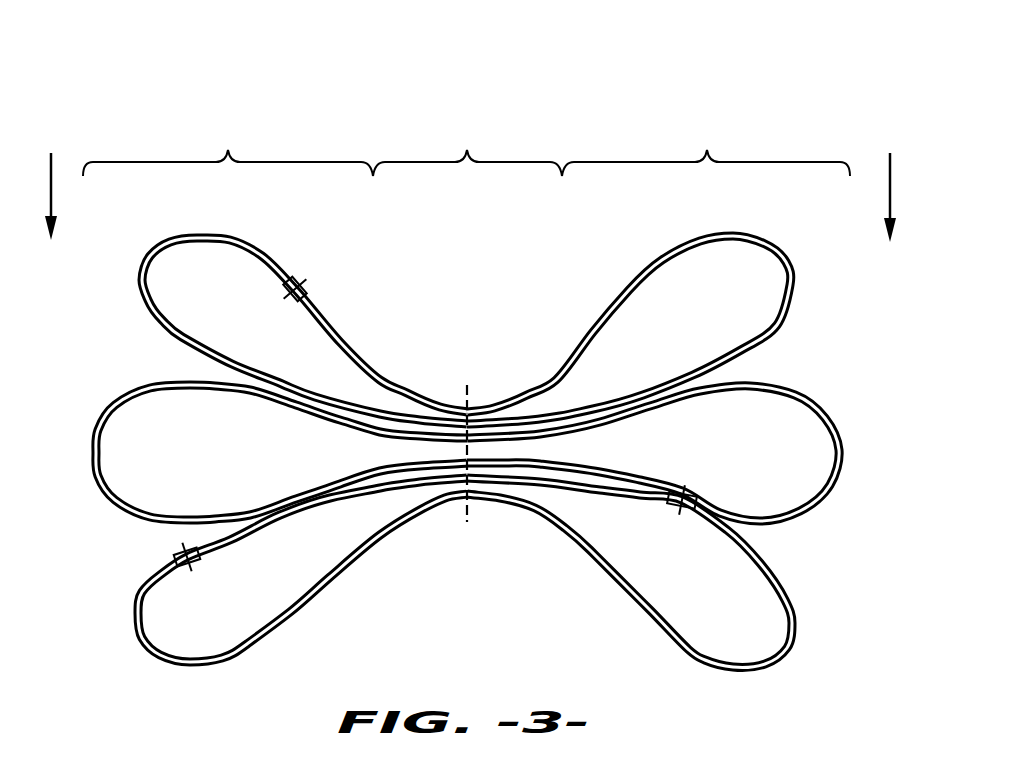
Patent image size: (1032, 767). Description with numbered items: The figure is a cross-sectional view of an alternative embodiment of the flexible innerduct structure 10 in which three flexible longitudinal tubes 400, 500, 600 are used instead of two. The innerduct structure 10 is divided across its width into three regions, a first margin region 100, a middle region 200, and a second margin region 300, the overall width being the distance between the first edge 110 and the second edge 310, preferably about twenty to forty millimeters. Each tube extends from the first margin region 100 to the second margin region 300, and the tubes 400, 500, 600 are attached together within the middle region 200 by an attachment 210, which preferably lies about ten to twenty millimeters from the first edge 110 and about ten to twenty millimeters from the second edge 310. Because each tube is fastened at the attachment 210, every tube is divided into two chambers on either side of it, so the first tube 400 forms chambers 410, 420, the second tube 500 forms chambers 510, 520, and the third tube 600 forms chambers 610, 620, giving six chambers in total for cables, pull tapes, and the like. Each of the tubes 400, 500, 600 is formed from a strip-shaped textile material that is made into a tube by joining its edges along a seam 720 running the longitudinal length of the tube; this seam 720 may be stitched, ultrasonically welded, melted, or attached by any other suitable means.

The innerduct structure 10 is at (322, 93).
The first margin region 100 is at (228, 143).
The first edge 110 is at (51, 179).
The middle region 200 is at (467, 143).
The attachment 210 is at (465, 507).
The second margin region 300 is at (706, 143).
The second edge 310 is at (893, 179).
The flexible longitudinal tube 400 is at (503, 330).
The chamber 410 is at (240, 312).
The chamber 420 is at (742, 312).
The flexible longitudinal tube 500 is at (503, 454).
The chamber 510 is at (202, 468).
The chamber 520 is at (775, 465).
The flexible longitudinal tube 600 is at (500, 586).
The chamber 610 is at (248, 613).
The chamber 620 is at (738, 617).
The seam 720 is at (307, 286).